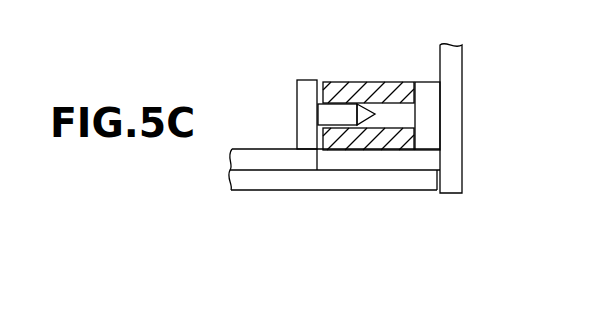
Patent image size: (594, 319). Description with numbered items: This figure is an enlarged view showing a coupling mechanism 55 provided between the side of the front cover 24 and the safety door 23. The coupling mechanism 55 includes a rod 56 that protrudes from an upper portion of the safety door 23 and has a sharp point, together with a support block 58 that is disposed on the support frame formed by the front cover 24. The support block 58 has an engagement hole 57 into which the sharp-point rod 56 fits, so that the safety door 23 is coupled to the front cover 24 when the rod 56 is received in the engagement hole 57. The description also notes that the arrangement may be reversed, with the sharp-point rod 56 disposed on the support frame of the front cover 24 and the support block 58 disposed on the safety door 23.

The safety door 23 is at (328, 191).
The front cover 24 is at (452, 121).
The coupling mechanism 55 is at (471, 180).
The rod 56 is at (343, 107).
The engagement hole 57 is at (400, 126).
The support block 58 is at (386, 97).